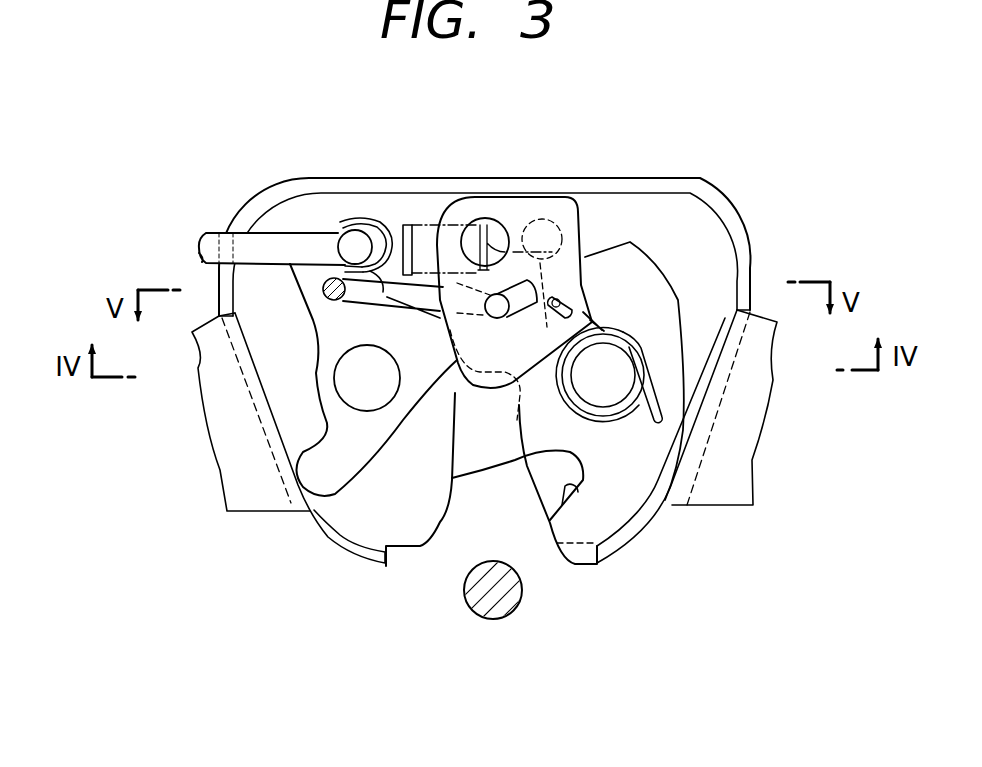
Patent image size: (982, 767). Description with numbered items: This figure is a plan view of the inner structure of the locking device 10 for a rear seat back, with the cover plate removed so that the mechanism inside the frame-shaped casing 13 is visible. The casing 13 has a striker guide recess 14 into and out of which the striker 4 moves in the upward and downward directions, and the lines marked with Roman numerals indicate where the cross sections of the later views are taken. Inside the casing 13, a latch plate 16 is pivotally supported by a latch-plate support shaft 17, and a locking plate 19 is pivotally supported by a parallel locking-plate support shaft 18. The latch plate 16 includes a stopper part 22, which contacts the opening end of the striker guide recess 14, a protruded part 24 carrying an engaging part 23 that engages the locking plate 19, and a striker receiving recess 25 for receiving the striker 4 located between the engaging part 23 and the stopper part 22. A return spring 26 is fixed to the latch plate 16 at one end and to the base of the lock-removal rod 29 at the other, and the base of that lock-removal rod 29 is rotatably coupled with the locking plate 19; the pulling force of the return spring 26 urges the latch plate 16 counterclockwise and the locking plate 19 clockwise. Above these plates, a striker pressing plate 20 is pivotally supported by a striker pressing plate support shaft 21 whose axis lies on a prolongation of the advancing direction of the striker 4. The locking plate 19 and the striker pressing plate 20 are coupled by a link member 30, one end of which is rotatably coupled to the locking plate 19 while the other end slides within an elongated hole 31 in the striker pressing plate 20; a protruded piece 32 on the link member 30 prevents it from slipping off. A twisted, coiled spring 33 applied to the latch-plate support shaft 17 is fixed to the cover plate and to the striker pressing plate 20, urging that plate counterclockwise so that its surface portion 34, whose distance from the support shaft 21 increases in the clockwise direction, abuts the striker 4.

The striker 4 is at (495, 593).
The latch device 10 is at (766, 190).
The casing 13 is at (693, 187).
The striker guide recess 14 is at (443, 523).
The latch plate 16 is at (668, 398).
The latch-plate support shaft 17 is at (603, 360).
The locking-plate support shaft 18 is at (367, 398).
The locking plate 19 is at (330, 393).
The striker pressing plate 20 is at (558, 207).
The striker pressing plate support shaft 21 is at (495, 220).
The stopper part 22 is at (580, 558).
The engaging part 23 is at (480, 462).
The protruded part 24 is at (489, 401).
The striker receiving recess 25 is at (577, 491).
The return spring 26 is at (407, 220).
The lock-removal rod 29 is at (206, 232).
The link member 30 is at (428, 287).
The elongated hole 31 is at (582, 226).
The protruded piece 32 is at (333, 249).
The twisted, coiled spring 33 is at (632, 340).
The surface portion 34 is at (494, 405).